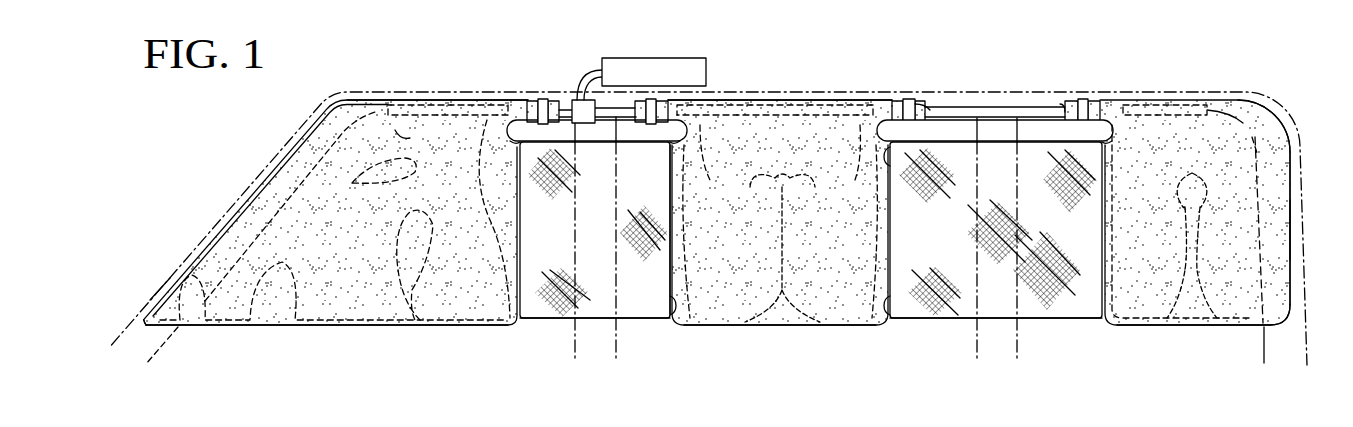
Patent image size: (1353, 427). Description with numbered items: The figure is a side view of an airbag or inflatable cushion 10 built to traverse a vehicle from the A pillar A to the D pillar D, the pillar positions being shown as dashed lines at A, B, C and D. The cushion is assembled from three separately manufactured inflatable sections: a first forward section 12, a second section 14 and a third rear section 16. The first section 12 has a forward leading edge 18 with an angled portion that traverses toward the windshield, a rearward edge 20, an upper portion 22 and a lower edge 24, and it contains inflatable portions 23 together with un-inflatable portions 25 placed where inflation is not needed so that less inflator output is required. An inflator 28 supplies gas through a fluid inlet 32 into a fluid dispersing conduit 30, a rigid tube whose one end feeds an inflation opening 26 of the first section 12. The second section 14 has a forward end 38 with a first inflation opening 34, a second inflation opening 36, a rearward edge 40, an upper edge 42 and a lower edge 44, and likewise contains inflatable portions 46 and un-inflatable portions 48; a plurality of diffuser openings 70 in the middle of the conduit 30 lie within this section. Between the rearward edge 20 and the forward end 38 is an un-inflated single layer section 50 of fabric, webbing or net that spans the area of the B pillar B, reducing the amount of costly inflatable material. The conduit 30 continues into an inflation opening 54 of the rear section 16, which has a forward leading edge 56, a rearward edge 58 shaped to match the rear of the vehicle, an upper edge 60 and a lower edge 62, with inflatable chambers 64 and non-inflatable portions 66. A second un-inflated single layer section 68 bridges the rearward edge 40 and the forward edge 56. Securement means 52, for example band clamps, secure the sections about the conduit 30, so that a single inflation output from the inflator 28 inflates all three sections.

The inflatable cushion 10 is at (1182, 43).
The first forward section 12 is at (415, 328).
The second section 14 is at (837, 328).
The third rear section 16 is at (1212, 330).
The forward leading edge 18 is at (247, 200).
The rearward edge 20 is at (517, 325).
The upper portion 22 is at (455, 100).
The inflatable portions 23 is at (403, 137).
The lower edge 24 is at (353, 325).
The un-inflatable portions 25 is at (283, 325).
The inflation opening 26 is at (512, 110).
The inflator 28 is at (700, 78).
The fluid dispersing conduit 30 is at (563, 105).
The fluid inlet 32 is at (582, 96).
The first inflation opening 34 is at (675, 100).
The second inflation opening 36 is at (930, 105).
The forward end 38 is at (665, 295).
The rearward edge 40 is at (900, 155).
The upper edge 42 is at (790, 100).
The lower edge 44 is at (767, 325).
The inflatable portions 46 is at (748, 135).
The un-inflatable portions 48 is at (873, 130).
The un-inflated single layer section 50 is at (538, 318).
The securement means 52 is at (541, 100).
The inflation opening 54 is at (1058, 100).
The forward leading edge 56 is at (1105, 320).
The rearward edge 58 is at (1290, 250).
The upper edge 60 is at (1243, 100).
The lower edge 62 is at (1243, 327).
The inflatable portions or chambers 64 is at (1233, 147).
The non-inflatable portions 66 is at (1190, 325).
The un-inflated single layer section 68 is at (1045, 318).
The diffuser openings 70 is at (727, 100).
The A pillar A is at (190, 255).
The B pillar B is at (563, 320).
The C pillar C is at (970, 318).
The D pillar D is at (1302, 227).